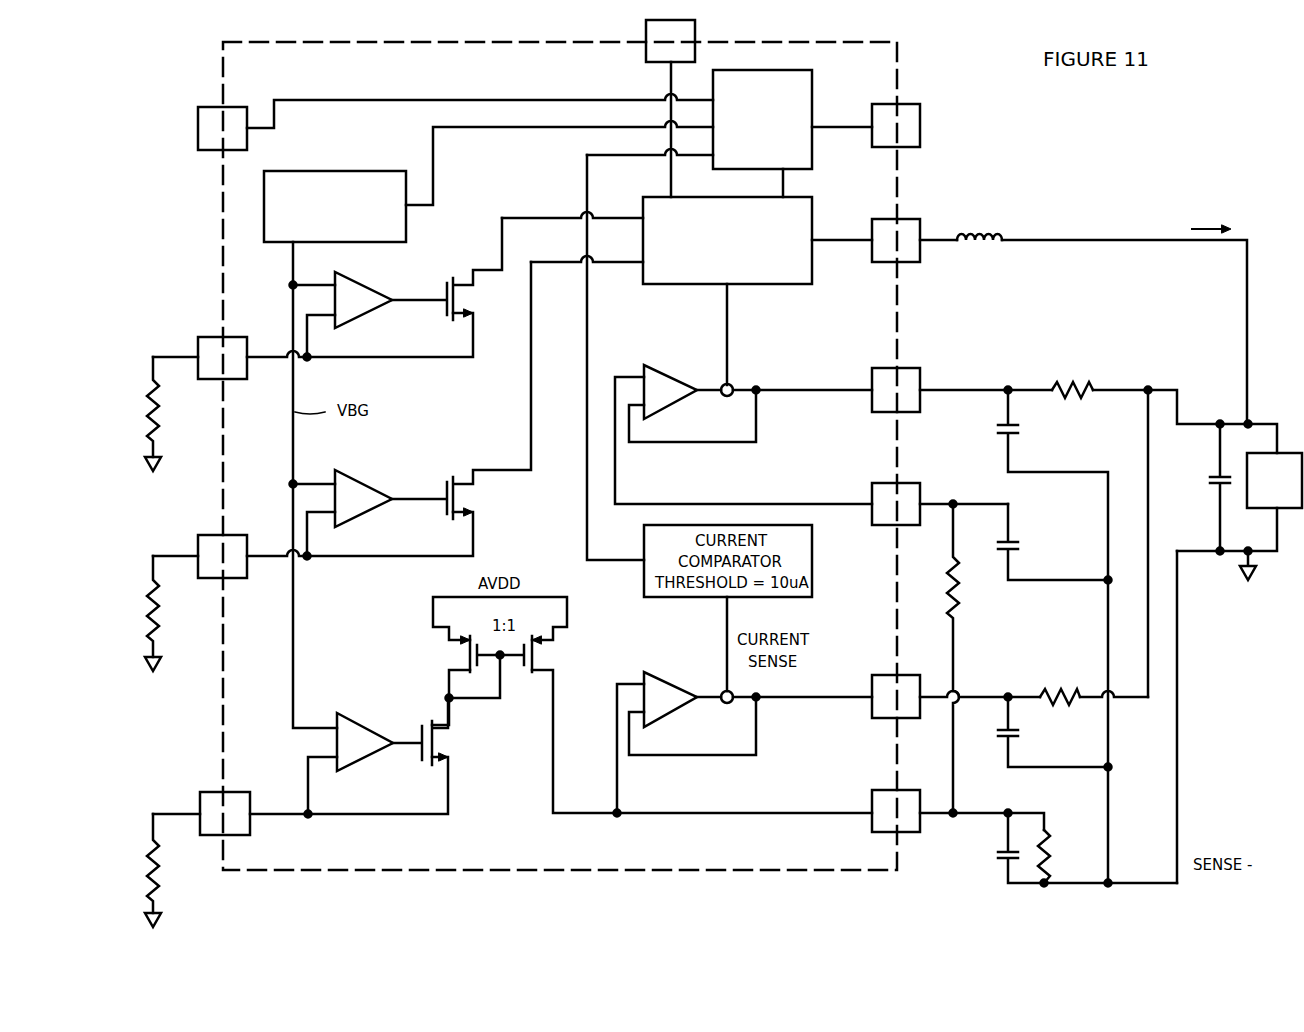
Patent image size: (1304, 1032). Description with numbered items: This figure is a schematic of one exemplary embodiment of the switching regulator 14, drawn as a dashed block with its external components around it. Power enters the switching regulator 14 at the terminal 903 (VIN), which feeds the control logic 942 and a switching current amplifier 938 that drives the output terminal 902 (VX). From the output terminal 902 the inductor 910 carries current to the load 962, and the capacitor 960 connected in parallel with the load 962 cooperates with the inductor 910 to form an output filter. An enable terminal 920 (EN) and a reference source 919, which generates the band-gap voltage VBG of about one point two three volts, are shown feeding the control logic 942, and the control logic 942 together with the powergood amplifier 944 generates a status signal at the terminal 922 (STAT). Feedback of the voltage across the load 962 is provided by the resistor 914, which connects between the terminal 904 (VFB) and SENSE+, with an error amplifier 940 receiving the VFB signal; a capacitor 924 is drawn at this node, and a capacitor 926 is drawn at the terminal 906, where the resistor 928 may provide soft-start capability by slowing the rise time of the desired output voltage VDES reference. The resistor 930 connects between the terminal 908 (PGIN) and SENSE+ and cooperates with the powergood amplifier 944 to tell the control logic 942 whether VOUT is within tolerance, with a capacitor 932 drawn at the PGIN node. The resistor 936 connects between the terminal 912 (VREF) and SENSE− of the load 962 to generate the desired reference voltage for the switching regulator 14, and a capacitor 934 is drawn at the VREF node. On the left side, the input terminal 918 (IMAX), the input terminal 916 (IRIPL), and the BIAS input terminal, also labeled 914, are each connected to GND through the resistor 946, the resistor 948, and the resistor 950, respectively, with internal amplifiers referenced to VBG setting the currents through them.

The switching regulator 14 is at (560, 456).
The terminal 903 is at (697, 38).
The EN pin 920 is at (198, 107).
The reference source 919 is at (360, 170).
The control logic 942 is at (699, 315).
The terminal 922 is at (920, 104).
The switching current amplifier 938 is at (687, 288).
The output terminal 902 is at (920, 219).
The inductor 910 is at (981, 226).
The input terminal 918 is at (198, 337).
The resistor 946 is at (168, 405).
The input terminal 916 is at (198, 535).
The resistor 948 is at (168, 606).
The resistor 914 is at (200, 792).
The resistor 950 is at (175, 865).
The error amplifier 940 is at (743, 423).
The terminal 904 is at (920, 368).
The terminal 906 is at (920, 483).
The powergood amplifier 944 is at (740, 719).
The terminal 908 is at (872, 675).
The terminal 912 is at (872, 790).
The feedback capacitor 924 is at (996, 421).
The VDES capacitor 926 is at (1026, 530).
The resistor 928 is at (968, 582).
The resistor 930 is at (1066, 682).
The PGIN capacitor 932 is at (1028, 734).
The VREF capacitor 934 is at (994, 857).
The resistor 936 is at (1064, 842).
The capacitor 960 is at (1206, 479).
The load 962 is at (1239, 501).